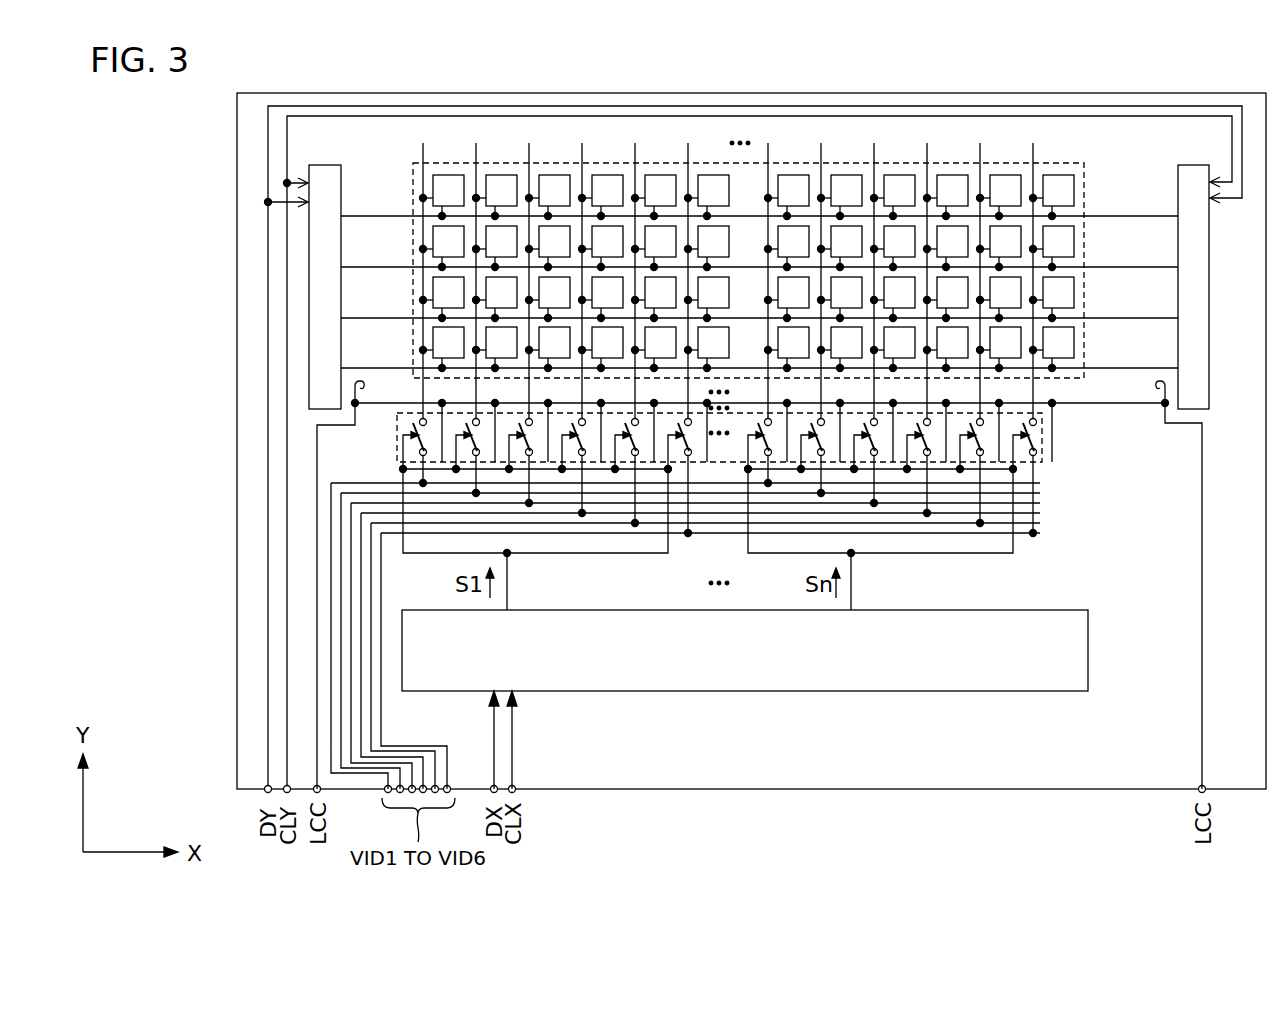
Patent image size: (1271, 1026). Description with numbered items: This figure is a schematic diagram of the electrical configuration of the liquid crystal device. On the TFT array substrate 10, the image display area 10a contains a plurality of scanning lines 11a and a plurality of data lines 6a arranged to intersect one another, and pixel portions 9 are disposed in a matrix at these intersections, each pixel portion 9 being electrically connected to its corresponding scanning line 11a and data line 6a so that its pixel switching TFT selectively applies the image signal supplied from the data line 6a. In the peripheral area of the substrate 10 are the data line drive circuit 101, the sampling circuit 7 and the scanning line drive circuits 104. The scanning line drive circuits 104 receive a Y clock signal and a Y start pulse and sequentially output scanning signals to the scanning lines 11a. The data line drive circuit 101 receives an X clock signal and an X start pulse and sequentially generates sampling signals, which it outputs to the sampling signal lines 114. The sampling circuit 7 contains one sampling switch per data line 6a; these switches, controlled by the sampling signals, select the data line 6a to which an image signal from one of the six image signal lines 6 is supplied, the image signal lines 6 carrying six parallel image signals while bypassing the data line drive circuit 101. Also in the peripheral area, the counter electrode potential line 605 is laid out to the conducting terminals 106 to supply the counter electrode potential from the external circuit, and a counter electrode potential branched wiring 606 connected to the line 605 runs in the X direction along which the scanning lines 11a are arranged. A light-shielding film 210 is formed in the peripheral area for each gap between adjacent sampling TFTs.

The TFT array substrate 10 is at (237, 465).
The scanning line drive circuit 104 is at (326, 165).
The pixel portion 9 is at (447, 193).
The image display area 10a is at (1084, 183).
The scanning line 11a is at (371, 368).
The data line 6a is at (425, 392).
The conducting terminal 106 is at (363, 386).
The counter electrode potential branched wiring 606 is at (372, 406).
The counter electrode potential line 605 is at (317, 470).
The sampling circuit 7 is at (1042, 425).
The light-shielding film 210 is at (1001, 429).
The image signal line 6 is at (1048, 477).
The sampling signal line 114 is at (507, 580).
The data line drive circuit 101 is at (722, 691).